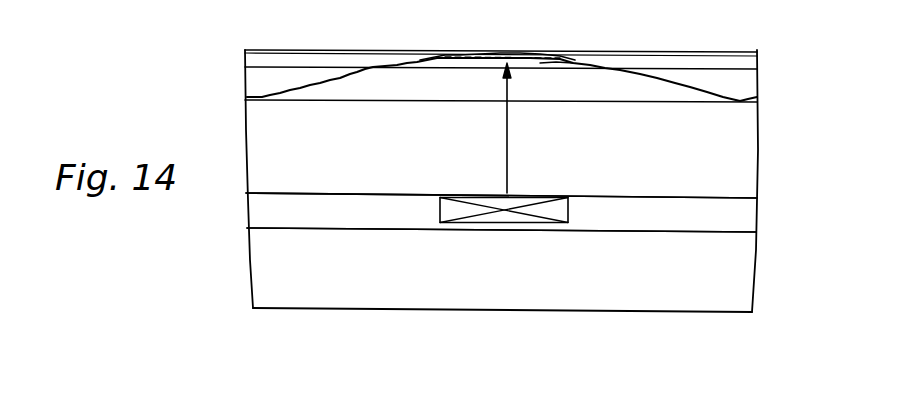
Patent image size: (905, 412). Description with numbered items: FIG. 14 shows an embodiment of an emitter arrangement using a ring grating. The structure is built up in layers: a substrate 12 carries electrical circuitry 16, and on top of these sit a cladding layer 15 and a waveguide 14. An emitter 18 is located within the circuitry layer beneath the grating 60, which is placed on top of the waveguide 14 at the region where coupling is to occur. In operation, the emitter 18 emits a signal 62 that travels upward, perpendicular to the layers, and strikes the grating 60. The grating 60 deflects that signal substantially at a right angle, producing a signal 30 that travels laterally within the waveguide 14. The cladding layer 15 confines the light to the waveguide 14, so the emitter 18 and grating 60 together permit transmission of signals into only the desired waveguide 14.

The substrate 12 is at (757, 273).
The waveguide 14 is at (756, 78).
The cladding layer 15 is at (757, 149).
The electrical circuitry 16 is at (757, 213).
The emitter 18 is at (505, 217).
The signal 30 is at (312, 80).
The ring grating 60 is at (547, 58).
The signal 62 is at (507, 138).